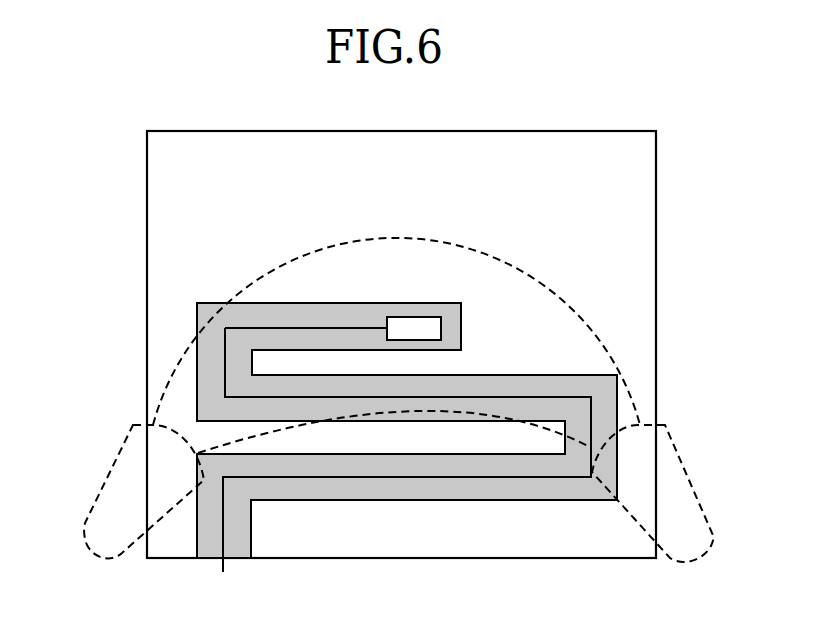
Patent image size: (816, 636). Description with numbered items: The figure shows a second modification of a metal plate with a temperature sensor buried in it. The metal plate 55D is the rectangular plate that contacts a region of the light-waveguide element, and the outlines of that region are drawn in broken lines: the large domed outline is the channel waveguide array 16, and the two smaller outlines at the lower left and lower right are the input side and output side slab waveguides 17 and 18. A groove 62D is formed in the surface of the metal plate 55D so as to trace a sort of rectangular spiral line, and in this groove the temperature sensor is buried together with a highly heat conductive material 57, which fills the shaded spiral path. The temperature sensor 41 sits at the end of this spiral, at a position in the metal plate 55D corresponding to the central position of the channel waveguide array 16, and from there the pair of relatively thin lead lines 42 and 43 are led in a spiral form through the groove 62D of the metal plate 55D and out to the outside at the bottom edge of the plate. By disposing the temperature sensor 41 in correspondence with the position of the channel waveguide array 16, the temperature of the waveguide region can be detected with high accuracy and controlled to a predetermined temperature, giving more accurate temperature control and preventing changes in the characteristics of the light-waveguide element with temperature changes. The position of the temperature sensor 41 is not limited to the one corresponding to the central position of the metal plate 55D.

The channel waveguide array 16 is at (513, 275).
The input side slab waveguide 17 is at (110, 470).
The output side slab waveguide 18 is at (684, 464).
The temperature sensor 41 is at (415, 330).
The lead line 42 is at (286, 585).
The lead line 43 is at (224, 566).
The metal plate 55D is at (655, 313).
The highly heat conductive material 57 is at (407, 430).
The groove 62D is at (468, 388).